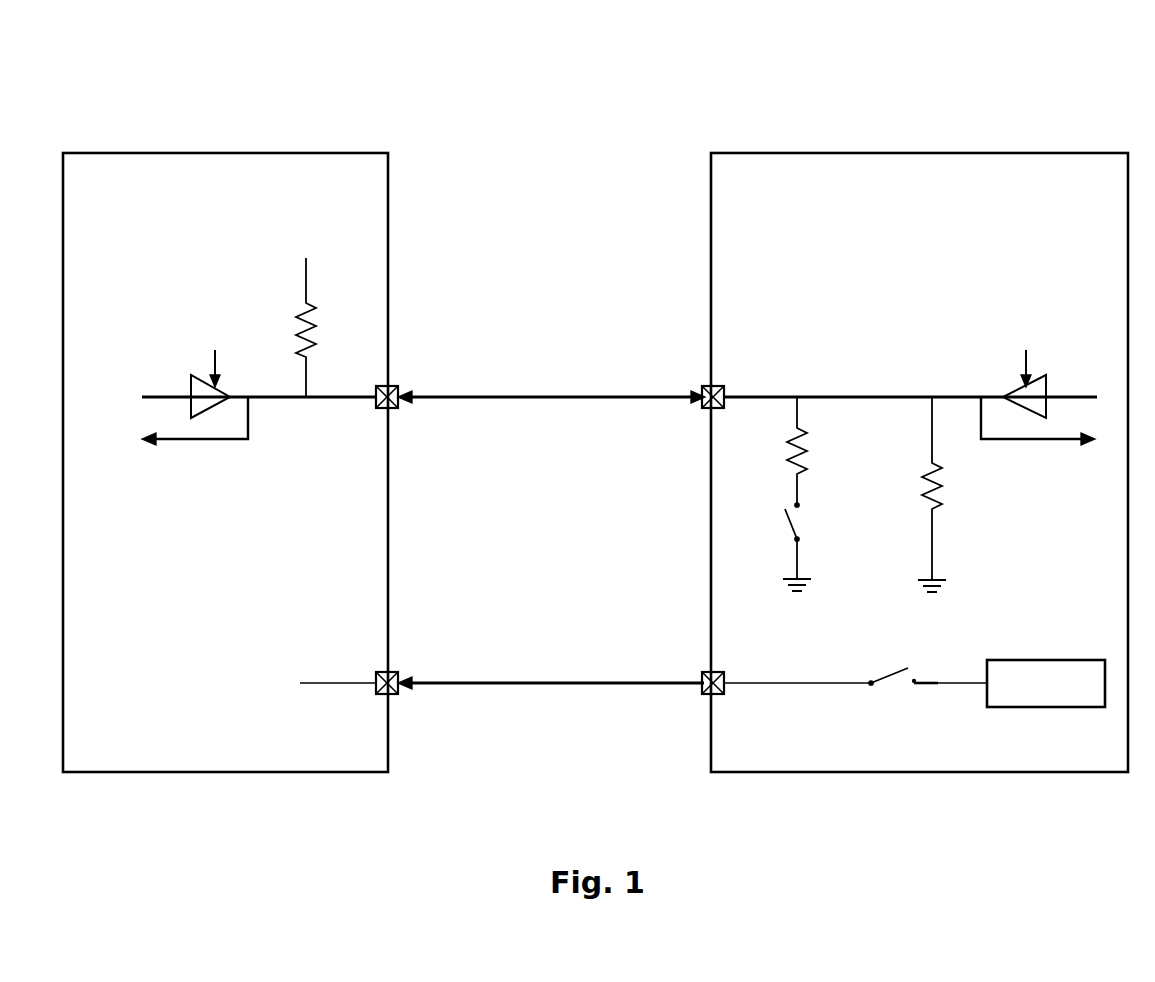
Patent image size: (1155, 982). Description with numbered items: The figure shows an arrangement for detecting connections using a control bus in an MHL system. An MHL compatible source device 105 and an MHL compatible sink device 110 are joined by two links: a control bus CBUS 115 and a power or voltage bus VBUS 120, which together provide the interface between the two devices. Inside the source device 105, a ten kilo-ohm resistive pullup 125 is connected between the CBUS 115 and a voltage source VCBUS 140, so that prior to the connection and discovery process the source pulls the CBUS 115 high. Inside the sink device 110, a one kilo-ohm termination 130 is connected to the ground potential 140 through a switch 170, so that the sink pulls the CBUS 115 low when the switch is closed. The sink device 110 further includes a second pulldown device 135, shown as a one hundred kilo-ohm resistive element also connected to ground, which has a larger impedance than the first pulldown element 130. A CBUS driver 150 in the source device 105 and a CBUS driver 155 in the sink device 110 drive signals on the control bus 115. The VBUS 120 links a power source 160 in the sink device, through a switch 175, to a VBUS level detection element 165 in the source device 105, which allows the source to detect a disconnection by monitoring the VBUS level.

The MHL compatible source device 105 is at (233, 137).
The MHL compatible sink device 110 is at (895, 137).
The control bus CBUS 115 is at (463, 400).
The voltage bus VBUS 120 is at (465, 695).
The resistive pullup 125 is at (300, 303).
The termination 130 is at (779, 460).
The second pulldown device 135 is at (918, 494).
The voltage source VCBUS / ground potential 140 is at (932, 596).
The CBUS driver 150 is at (195, 426).
The CBUS driver 155 is at (1038, 427).
The power source 160 is at (1062, 708).
The VBUS level detection element 165 is at (214, 698).
The switch 170 is at (810, 541).
The switch 175 is at (926, 691).